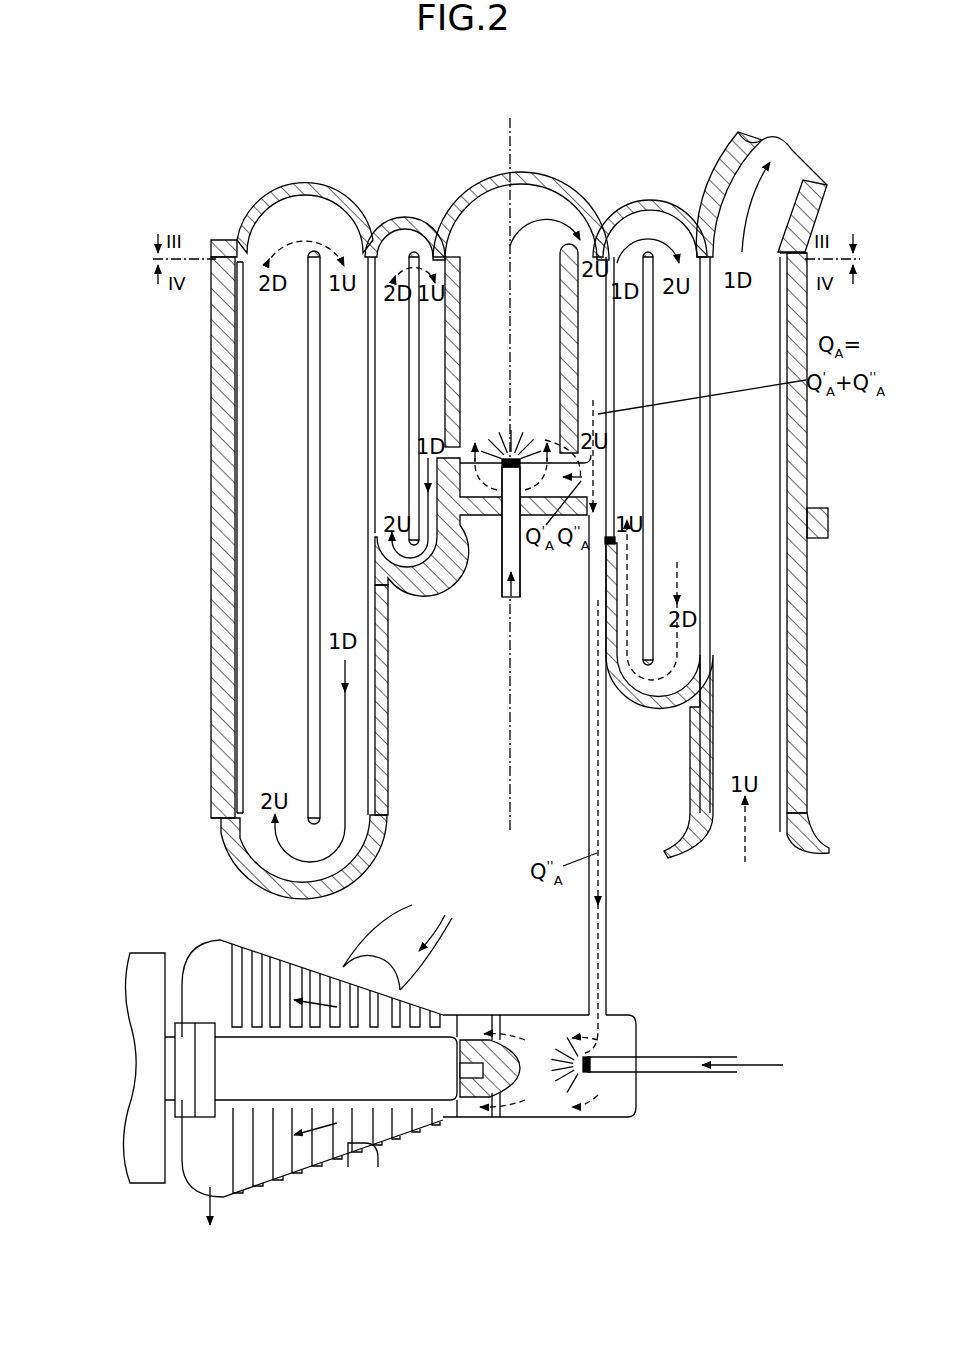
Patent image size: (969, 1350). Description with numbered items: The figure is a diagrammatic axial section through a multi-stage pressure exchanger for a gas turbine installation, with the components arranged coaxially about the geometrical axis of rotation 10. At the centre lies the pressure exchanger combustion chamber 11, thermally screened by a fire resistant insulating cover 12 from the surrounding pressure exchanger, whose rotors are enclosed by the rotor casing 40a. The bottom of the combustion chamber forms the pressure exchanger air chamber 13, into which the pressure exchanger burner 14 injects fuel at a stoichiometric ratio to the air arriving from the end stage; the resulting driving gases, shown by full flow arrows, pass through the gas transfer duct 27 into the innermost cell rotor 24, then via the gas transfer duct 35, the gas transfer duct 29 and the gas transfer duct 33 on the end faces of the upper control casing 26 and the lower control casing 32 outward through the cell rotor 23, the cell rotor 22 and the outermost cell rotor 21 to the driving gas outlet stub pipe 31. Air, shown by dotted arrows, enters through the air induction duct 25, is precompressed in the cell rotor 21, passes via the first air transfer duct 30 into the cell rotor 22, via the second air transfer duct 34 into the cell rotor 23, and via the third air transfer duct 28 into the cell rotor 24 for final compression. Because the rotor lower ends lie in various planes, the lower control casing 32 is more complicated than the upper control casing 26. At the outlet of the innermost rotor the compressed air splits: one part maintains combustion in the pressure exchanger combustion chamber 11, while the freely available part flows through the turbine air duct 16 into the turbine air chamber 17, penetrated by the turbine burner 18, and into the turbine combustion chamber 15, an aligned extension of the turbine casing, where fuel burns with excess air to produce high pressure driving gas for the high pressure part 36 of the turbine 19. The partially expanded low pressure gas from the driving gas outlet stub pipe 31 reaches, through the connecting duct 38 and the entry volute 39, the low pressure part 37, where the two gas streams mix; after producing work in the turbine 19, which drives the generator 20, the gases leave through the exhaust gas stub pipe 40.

The geometrical axis of rotation 10 is at (510, 140).
The pressure exchanger combustion chamber 11 is at (555, 303).
The fire resistant insulating cover 12 is at (455, 302).
The pressure exchanger air chamber 13 is at (476, 490).
The pressure exchanger burner 14 is at (503, 448).
The turbine combustion chamber 15 is at (548, 1103).
The turbine air duct 16 is at (601, 798).
The turbine air chamber 17 is at (622, 1041).
The turbine burner 18 is at (620, 1066).
The turbine 19 is at (408, 1006).
The generator 20 is at (154, 1128).
The outermost cell rotor 21 is at (287, 613).
The second cell rotor 22 is at (362, 543).
The third cell rotor 23 is at (410, 461).
The innermost cell rotor 24 is at (446, 358).
The air induction duct 25 is at (739, 868).
The upper control casing 26 is at (541, 182).
The gas transfer duct 27 is at (503, 240).
The third air transfer duct 28 is at (401, 226).
The gas transfer duct 29 is at (645, 212).
The first air transfer duct 30 is at (316, 225).
The driving gas outlet stub pipe 31 is at (785, 160).
The lower control casing 32 is at (432, 703).
The gas transfer duct 33 is at (319, 880).
The second air transfer duct 34 is at (686, 693).
The gas transfer duct 35 is at (404, 584).
The high pressure part of the gas turbine 36 is at (384, 1118).
The low pressure part of the gas turbine 37 is at (268, 1168).
The connecting duct 38 is at (437, 933).
The entry volute 39 is at (358, 1154).
The exhaust gas stub pipe 40 is at (222, 1200).
The rotor casing 40a is at (214, 507).